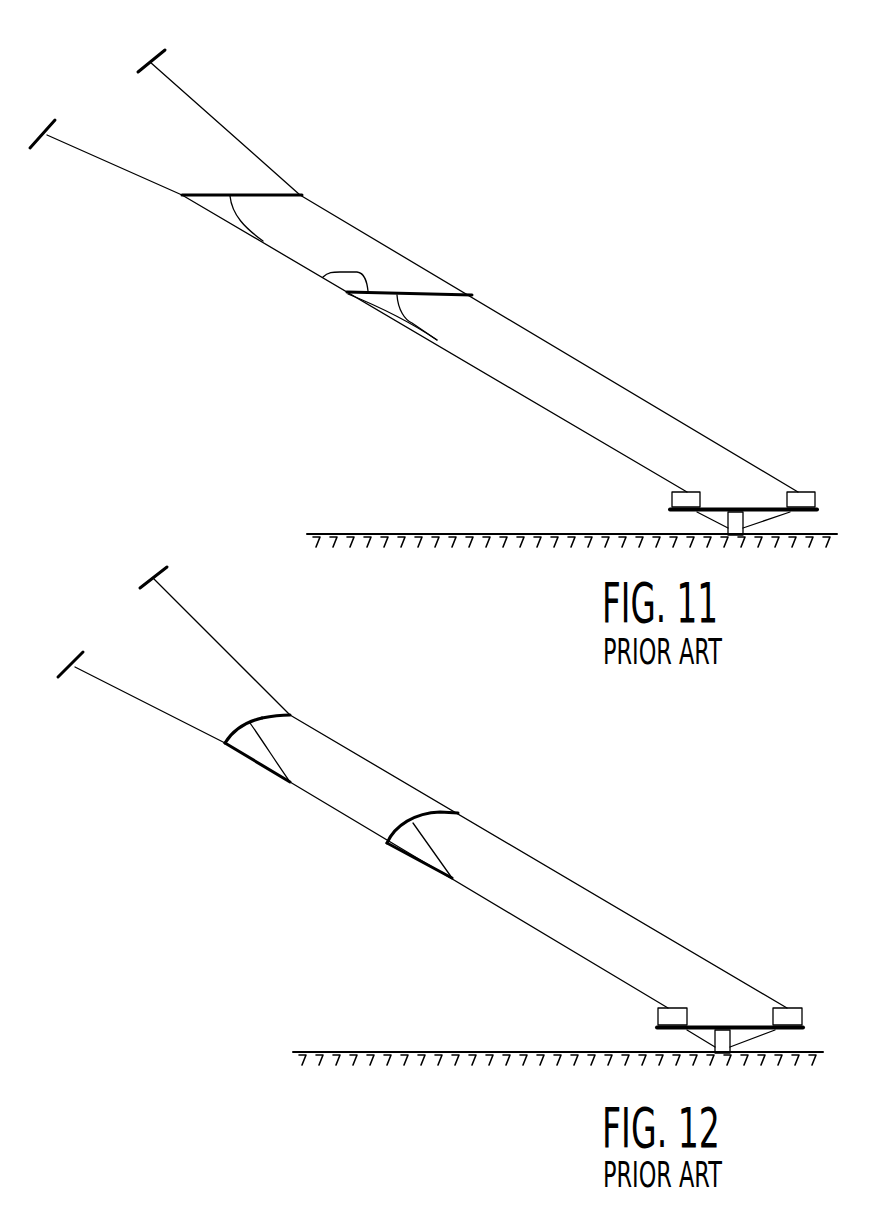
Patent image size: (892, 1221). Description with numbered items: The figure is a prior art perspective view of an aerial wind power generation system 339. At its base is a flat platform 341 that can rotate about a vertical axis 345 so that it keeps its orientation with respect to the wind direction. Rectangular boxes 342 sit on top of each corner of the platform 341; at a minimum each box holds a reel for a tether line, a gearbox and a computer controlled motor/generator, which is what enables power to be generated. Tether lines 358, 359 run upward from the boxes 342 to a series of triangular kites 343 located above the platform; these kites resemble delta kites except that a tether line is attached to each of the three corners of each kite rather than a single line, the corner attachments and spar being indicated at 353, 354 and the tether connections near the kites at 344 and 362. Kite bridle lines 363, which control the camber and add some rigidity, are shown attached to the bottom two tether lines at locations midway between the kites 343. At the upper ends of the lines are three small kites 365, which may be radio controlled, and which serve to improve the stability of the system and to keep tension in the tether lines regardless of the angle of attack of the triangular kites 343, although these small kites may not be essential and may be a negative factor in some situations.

In FIG. 11, the prior art conduit support assembly 339 is at (718, 369).
In FIG. 12, the prior art conduit support assembly 339 is at (732, 868).
In FIG. 11, the flat platform 341 is at (683, 513).
In FIG. 12, the flat platform 341 is at (667, 1030).
In FIG. 11, the rectangular boxes 342 is at (672, 498).
In FIG. 12, the rectangular boxes 342 is at (658, 1017).
In FIG. 11, the triangular kites 343 is at (447, 292).
In FIG. 12, the triangular kites 343 is at (257, 713).
In FIG. 11, the saddle 344 is at (323, 278).
In FIG. 12, the saddle 344 is at (383, 828).
In FIG. 11, the vertical axis 345 is at (745, 527).
In FIG. 12, the vertical axis 345 is at (732, 1047).
In FIG. 11, the cross bar 353 is at (302, 194).
In FIG. 12, the cross bar 353 is at (290, 714).
In FIG. 11, the bend 354 is at (178, 196).
In FIG. 12, the bend 354 is at (223, 745).
In FIG. 11, the first conduit 358 is at (745, 460).
In FIG. 12, the first conduit 358 is at (570, 880).
In FIG. 11, the second conduit 359 is at (560, 418).
In FIG. 12, the second conduit 359 is at (277, 777).
In FIG. 12, the brace 362 is at (430, 867).
In FIG. 11, the kite bridle lines 363 is at (412, 323).
In FIG. 12, the kite bridle lines 363 is at (268, 752).
In FIG. 11, the small kites 365 is at (150, 62).
In FIG. 12, the small kites 365 is at (142, 578).